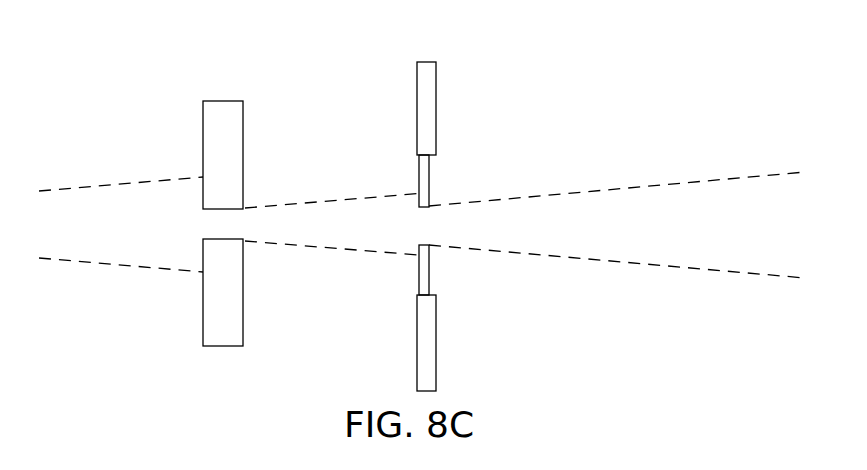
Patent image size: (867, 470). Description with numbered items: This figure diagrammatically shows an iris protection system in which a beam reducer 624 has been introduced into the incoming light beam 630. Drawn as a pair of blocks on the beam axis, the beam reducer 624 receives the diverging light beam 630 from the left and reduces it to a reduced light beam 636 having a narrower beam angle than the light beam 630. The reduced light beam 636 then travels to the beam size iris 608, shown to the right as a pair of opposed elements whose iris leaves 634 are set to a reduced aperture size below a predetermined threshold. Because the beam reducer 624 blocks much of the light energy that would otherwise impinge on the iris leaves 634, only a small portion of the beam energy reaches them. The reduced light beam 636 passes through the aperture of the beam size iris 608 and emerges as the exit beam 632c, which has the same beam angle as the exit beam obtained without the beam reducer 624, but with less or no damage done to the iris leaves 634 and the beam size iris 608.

The beam reducer 624 is at (228, 118).
The beam size iris 608 is at (425, 88).
The iris leaves 634 is at (427, 185).
The light beam 630 is at (137, 181).
The reduced light beam 636 is at (305, 202).
The exit beam 632c is at (610, 190).